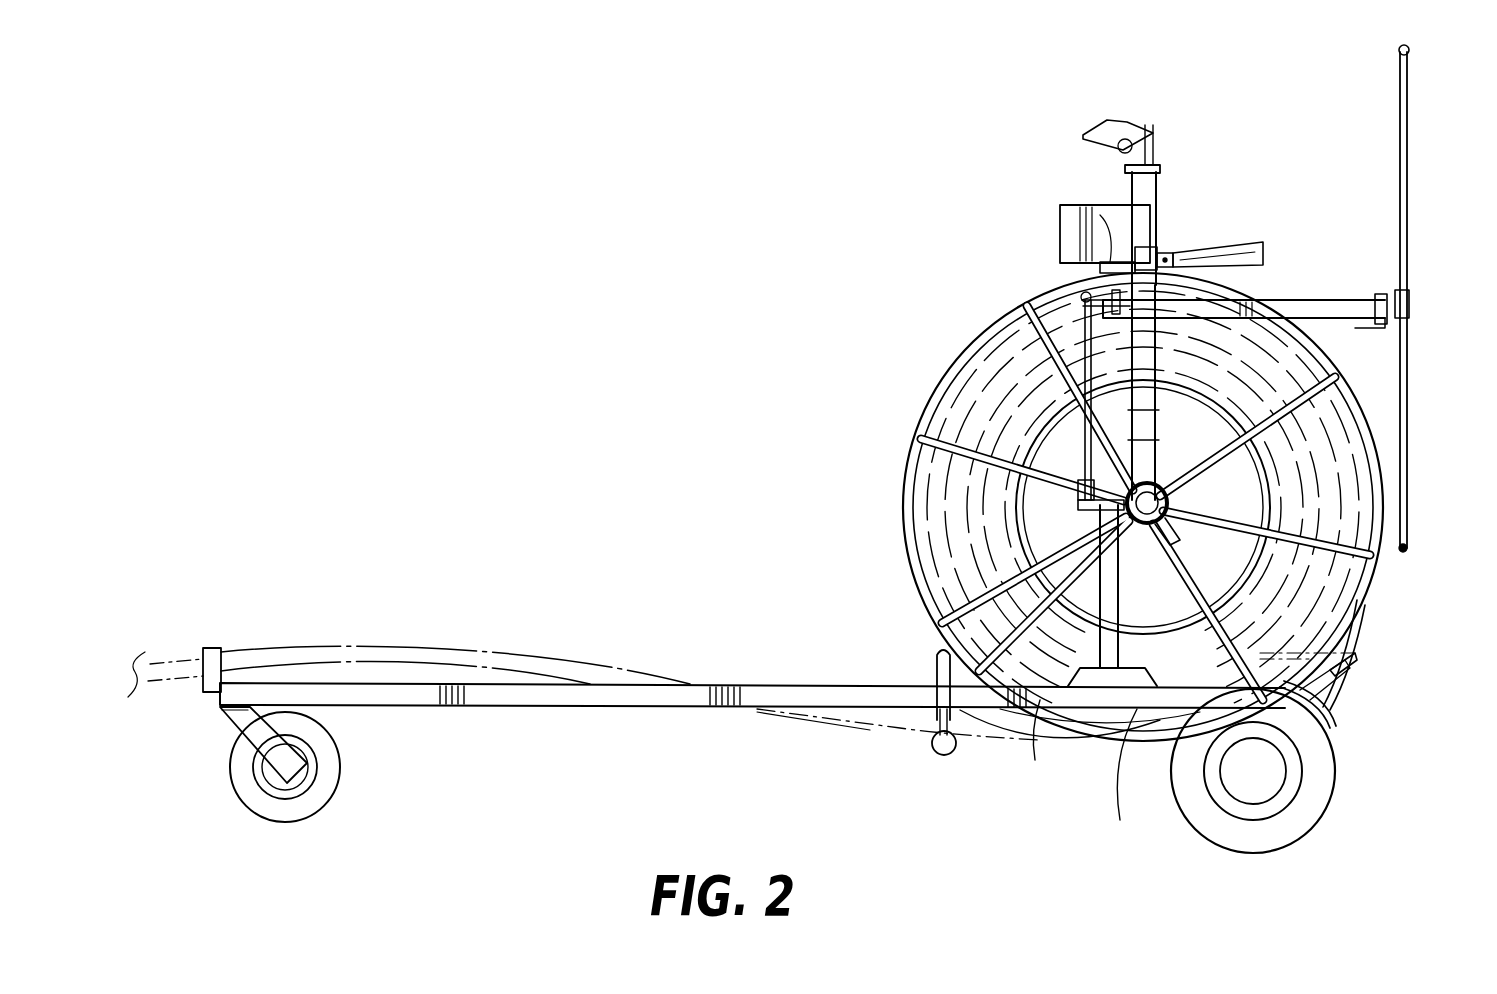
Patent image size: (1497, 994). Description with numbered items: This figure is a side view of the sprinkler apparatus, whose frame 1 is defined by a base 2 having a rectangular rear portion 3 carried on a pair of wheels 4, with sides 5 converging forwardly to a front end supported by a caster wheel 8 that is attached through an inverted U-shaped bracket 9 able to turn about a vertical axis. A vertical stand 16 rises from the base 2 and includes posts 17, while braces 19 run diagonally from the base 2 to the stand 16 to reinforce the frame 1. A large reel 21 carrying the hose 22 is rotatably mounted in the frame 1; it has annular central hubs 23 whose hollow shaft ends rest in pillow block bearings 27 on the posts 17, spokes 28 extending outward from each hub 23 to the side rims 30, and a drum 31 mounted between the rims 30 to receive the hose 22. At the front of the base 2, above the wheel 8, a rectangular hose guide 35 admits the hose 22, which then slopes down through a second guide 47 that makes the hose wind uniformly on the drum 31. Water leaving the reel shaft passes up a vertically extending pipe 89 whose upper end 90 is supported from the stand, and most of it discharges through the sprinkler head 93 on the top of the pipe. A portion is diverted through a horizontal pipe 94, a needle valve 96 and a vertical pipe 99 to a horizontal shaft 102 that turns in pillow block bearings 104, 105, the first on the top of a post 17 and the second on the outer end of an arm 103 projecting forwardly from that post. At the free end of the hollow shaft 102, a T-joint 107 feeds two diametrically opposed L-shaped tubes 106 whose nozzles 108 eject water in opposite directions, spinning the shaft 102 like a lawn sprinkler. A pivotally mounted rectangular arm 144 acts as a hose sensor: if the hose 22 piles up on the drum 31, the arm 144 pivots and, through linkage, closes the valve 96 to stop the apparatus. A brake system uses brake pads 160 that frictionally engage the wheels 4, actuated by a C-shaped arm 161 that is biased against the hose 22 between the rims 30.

The frame 1 is at (1082, 780).
The base 2 is at (728, 684).
The rear portion 3 is at (1135, 712).
The wheels 4 is at (1290, 825).
The sides 5 is at (490, 707).
The caster wheel 8 is at (316, 800).
The inverted U-shaped bracket 9 is at (232, 722).
The vertical stand 16 is at (1088, 212).
The posts 17 is at (1042, 708).
The braces 19 is at (1162, 590).
The reel 21 is at (858, 391).
The hose 22 is at (968, 388).
The annular central hubs 23 is at (1170, 496).
The pillow block bearings 27 is at (1000, 600).
The spokes 28 is at (1340, 432).
The side rims 30 is at (1370, 585).
The drum 31 is at (1075, 508).
The rectangular hose guide 35 is at (240, 650).
The second guide 47 is at (935, 775).
The vertically extending pipe 89 is at (1158, 410).
The upper end 90 is at (1160, 215).
The sprinkler head 93 is at (1150, 128).
The horizontal pipe 94 is at (1180, 538).
The needle valve 96 is at (1072, 500).
The vertical pipe 99 is at (1078, 440).
The horizontal shaft 102 is at (1338, 300).
The arm 103 is at (1372, 328).
The pillow block bearing 104 is at (1050, 290).
The pillow block bearing 105 is at (1381, 294).
The L-shaped tubes 106 is at (1399, 135).
The T-joint 107 is at (1410, 306).
The nozzles 108 is at (1398, 52).
The rectangular arm 144 is at (1250, 250).
The brake pads 160 is at (1335, 718).
The C-shaped arm 161 is at (1358, 663).